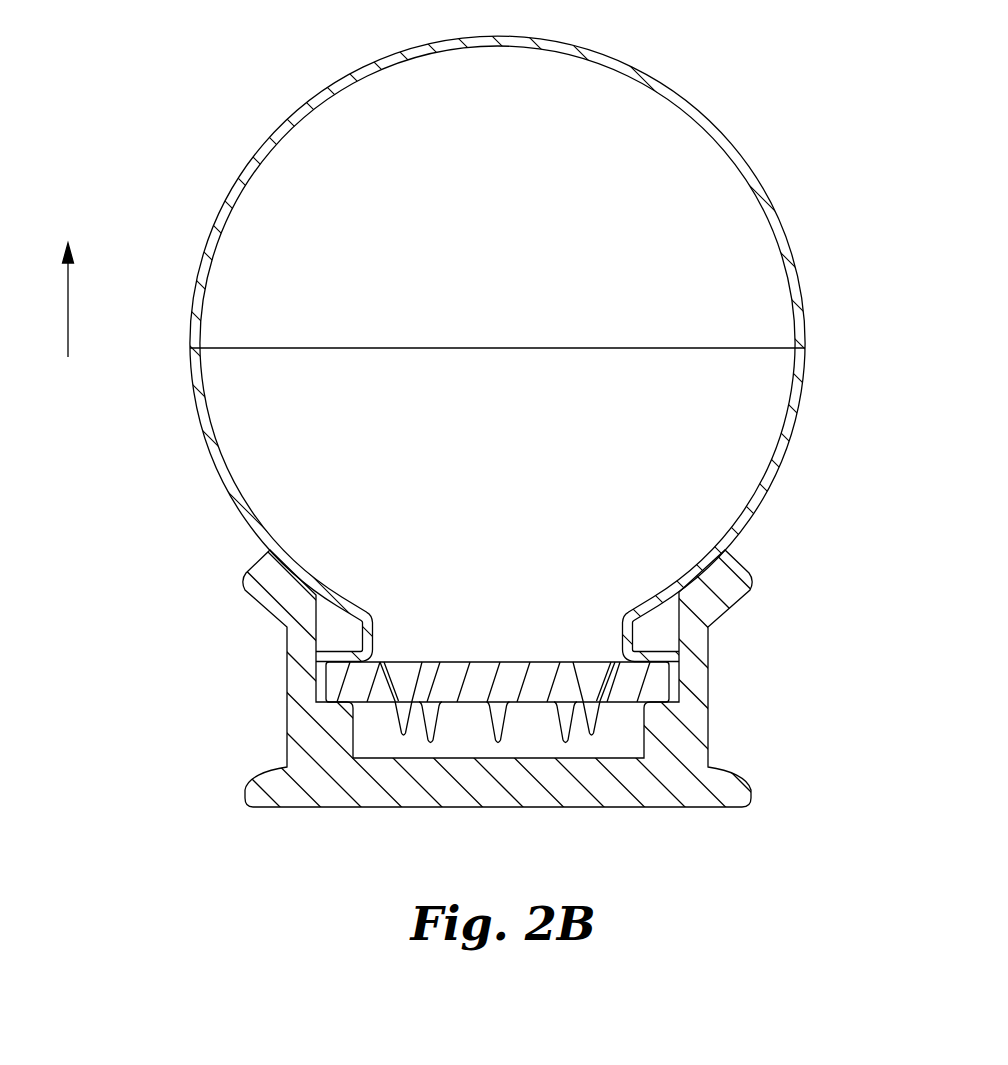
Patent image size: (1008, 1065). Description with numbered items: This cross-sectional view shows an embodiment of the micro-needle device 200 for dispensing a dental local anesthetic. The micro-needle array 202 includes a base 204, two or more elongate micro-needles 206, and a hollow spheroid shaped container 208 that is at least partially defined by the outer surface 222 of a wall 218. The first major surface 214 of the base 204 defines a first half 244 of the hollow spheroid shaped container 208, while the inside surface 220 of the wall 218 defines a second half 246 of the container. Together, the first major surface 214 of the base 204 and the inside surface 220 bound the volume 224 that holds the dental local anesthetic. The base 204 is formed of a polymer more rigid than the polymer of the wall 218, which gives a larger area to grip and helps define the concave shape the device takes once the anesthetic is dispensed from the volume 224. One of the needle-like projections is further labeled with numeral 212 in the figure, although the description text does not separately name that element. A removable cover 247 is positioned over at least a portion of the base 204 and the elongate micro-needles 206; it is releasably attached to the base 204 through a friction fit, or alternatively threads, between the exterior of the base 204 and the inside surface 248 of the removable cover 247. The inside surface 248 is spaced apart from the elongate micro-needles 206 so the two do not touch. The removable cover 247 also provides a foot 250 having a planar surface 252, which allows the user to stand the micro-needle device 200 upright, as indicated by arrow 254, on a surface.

The micro-needle device 200 is at (504, 438).
The micro-needle array 202 is at (504, 688).
The base 204 is at (501, 753).
The elongate micro-needle 206 is at (442, 758).
The hollow spheroid shaped container 208 is at (504, 350).
The tooth 212 is at (407, 725).
The first major surface 214 is at (497, 425).
The wall 218 is at (504, 350).
The inside surface 220 is at (485, 217).
The outer surface 222 is at (504, 350).
The volume 224 is at (253, 222).
The first half 244 is at (504, 350).
The second half 246 is at (504, 350).
The removable cover 247 is at (504, 688).
The inside surface 248 is at (504, 688).
The foot 250 is at (504, 688).
The planar surface 252 is at (578, 808).
The arrow 254 is at (70, 300).